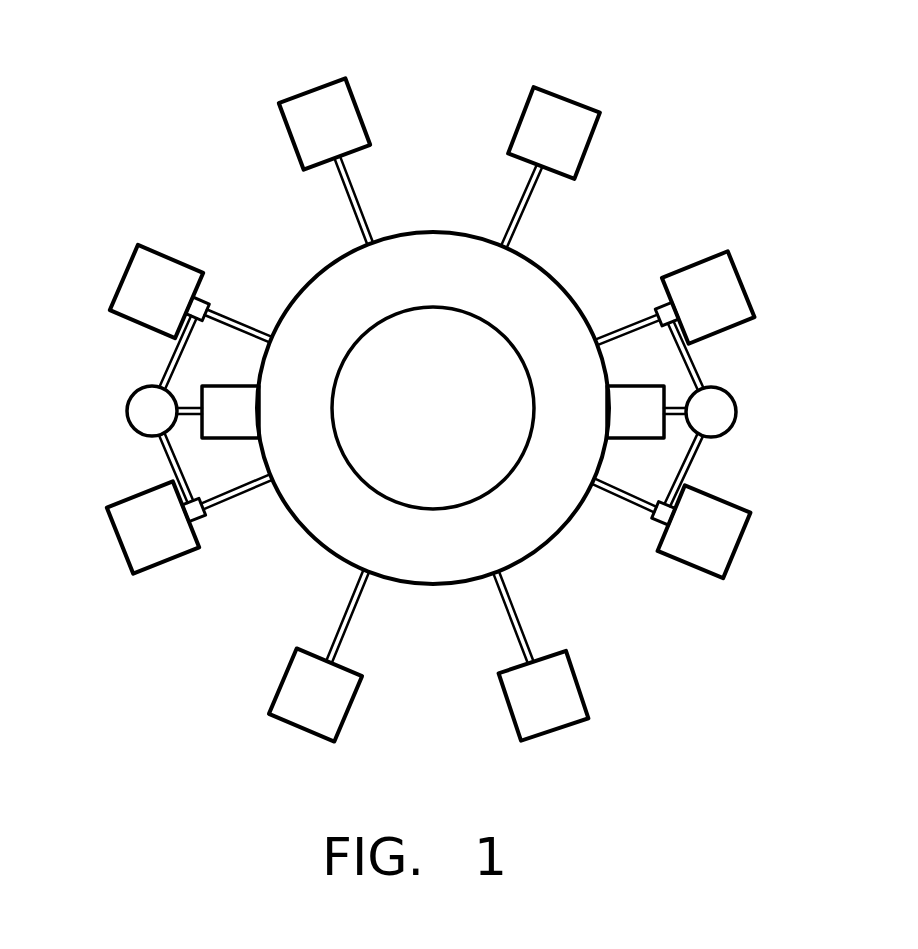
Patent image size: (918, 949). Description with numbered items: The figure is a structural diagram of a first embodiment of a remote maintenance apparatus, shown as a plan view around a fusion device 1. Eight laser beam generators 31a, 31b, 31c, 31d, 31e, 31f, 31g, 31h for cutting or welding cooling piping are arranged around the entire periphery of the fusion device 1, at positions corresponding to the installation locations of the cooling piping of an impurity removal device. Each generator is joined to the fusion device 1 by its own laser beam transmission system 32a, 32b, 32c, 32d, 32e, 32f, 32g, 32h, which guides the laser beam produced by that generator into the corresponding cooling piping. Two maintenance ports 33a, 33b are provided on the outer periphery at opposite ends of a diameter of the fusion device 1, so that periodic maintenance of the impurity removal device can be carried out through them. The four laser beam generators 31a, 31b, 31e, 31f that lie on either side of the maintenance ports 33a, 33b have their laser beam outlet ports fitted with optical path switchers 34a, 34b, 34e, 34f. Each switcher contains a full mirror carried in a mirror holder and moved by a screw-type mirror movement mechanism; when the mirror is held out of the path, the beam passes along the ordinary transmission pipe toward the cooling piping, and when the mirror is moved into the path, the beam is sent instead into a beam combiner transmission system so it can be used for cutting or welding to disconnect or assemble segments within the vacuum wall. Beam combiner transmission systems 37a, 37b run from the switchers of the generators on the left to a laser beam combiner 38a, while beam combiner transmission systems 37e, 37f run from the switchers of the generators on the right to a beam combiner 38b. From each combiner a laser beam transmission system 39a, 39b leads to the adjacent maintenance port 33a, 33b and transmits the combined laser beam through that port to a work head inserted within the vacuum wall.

The fusion device 1 is at (543, 268).
The laser beam generator 31a is at (155, 250).
The laser beam generator 31b is at (162, 563).
The laser beam generator 31c is at (350, 708).
The laser beam generator 31d is at (583, 692).
The laser beam generator 31e is at (687, 570).
The laser beam generator 31f is at (718, 252).
The laser beam generator 31g is at (563, 92).
The laser beam generator 31h is at (298, 93).
The laser beam transmission system 32a is at (250, 329).
The laser beam transmission system 32b is at (243, 493).
The laser beam transmission system 32c is at (348, 626).
The laser beam transmission system 32d is at (519, 624).
The laser beam transmission system 32e is at (612, 494).
The laser beam transmission system 32f is at (610, 334).
The laser beam transmission system 32g is at (517, 212).
The laser beam transmission system 32h is at (347, 173).
The maintenance port 33a is at (220, 386).
The maintenance port 33b is at (637, 388).
The optical path switcher 34a is at (208, 298).
The optical path switcher 34b is at (198, 523).
The optical path switcher 34e is at (655, 526).
The optical path switcher 34f is at (661, 305).
The beam combiner transmission system 37a is at (173, 357).
The beam combiner transmission system 37b is at (168, 456).
The beam combiner transmission system 37e is at (692, 462).
The beam combiner transmission system 37f is at (692, 359).
The laser beam combiner 38a is at (127, 412).
The beam combiner 38b is at (736, 412).
The laser beam transmission system 39a is at (192, 418).
The laser beam transmission system 39b is at (676, 418).